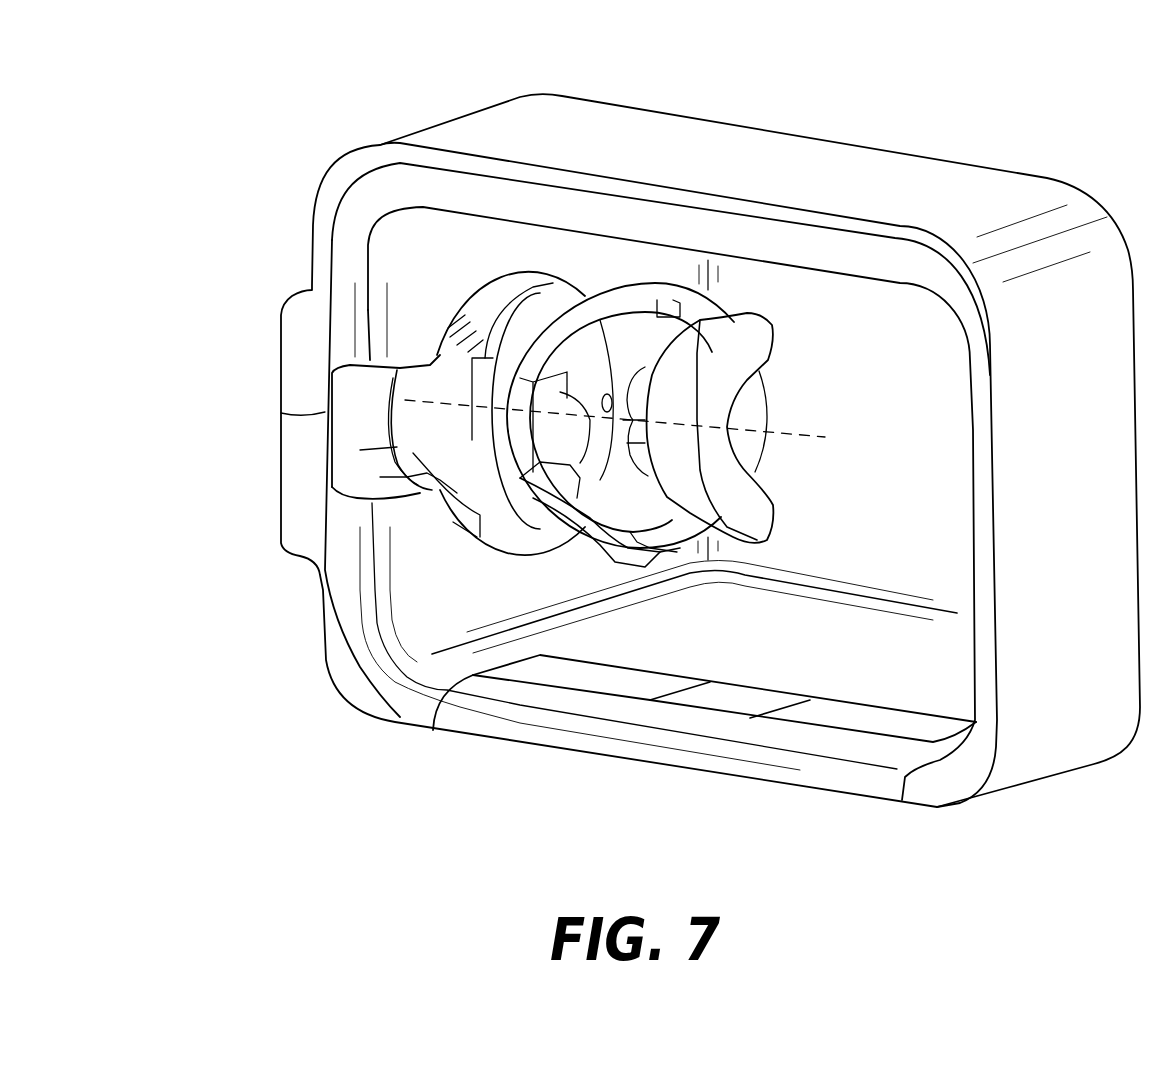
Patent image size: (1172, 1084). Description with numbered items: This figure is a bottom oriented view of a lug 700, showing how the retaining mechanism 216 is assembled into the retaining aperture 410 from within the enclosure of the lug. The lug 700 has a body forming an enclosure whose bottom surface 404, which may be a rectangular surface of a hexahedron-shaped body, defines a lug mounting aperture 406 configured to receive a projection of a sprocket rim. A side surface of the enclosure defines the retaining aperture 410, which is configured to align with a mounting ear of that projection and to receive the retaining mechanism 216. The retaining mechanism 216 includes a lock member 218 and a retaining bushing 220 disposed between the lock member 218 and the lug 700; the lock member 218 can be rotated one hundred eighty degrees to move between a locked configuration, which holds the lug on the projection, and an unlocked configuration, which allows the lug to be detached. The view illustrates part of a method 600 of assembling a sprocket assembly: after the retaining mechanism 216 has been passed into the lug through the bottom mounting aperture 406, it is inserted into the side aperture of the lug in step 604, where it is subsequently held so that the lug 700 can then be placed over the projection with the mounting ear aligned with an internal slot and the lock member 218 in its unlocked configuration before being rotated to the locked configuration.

The method of assembling a sprocket assembly 600 is at (975, 138).
The lug 700 is at (720, 157).
The bottom surface 404 is at (350, 687).
The lug mounting aperture 406 is at (872, 676).
The retaining aperture 410 is at (443, 357).
The retaining mechanism 216 is at (630, 283).
The lock member 218 is at (765, 525).
The retaining bushing 220 is at (663, 540).
The step of inserting the retaining mechanism into the side aperture 604 is at (360, 450).